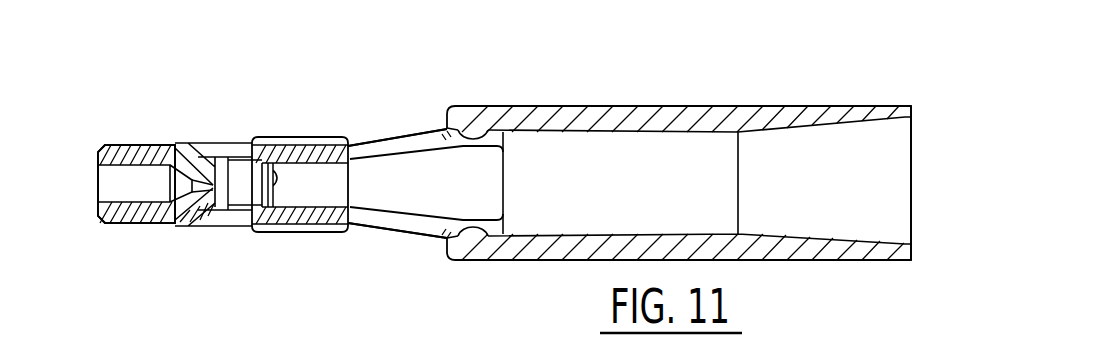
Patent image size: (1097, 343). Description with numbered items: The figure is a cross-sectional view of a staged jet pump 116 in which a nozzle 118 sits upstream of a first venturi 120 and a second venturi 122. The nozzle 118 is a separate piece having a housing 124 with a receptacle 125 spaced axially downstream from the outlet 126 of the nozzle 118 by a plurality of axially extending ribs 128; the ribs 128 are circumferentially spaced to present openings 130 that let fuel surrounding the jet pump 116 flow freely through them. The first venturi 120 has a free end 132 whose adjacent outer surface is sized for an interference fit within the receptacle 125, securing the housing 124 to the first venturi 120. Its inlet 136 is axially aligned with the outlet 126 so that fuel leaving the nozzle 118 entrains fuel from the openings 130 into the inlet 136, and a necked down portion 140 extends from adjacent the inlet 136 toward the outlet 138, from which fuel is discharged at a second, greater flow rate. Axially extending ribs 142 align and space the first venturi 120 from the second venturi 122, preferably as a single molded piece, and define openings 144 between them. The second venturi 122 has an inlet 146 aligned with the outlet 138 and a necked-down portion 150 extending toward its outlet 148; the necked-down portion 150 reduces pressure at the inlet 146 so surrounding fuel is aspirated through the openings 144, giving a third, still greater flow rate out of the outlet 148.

The staged jet pump 116 is at (255, 295).
The nozzle 118 is at (137, 145).
The first venturi 120 is at (302, 145).
The second venturi 122 is at (560, 107).
The housing 124 is at (256, 117).
The receptacle 125 is at (340, 137).
The outlet 126 is at (237, 150).
The ribs 128 is at (216, 218).
The openings 130 is at (179, 116).
The free end 132 is at (240, 150).
The inlet 136 is at (215, 225).
The outlet 138 is at (350, 192).
The necked down portion 140 is at (292, 162).
The ribs 142 is at (400, 140).
The openings 144 is at (374, 114).
The inlet 146 is at (450, 127).
The outlet 148 is at (907, 142).
The necked-down portion 150 is at (502, 124).